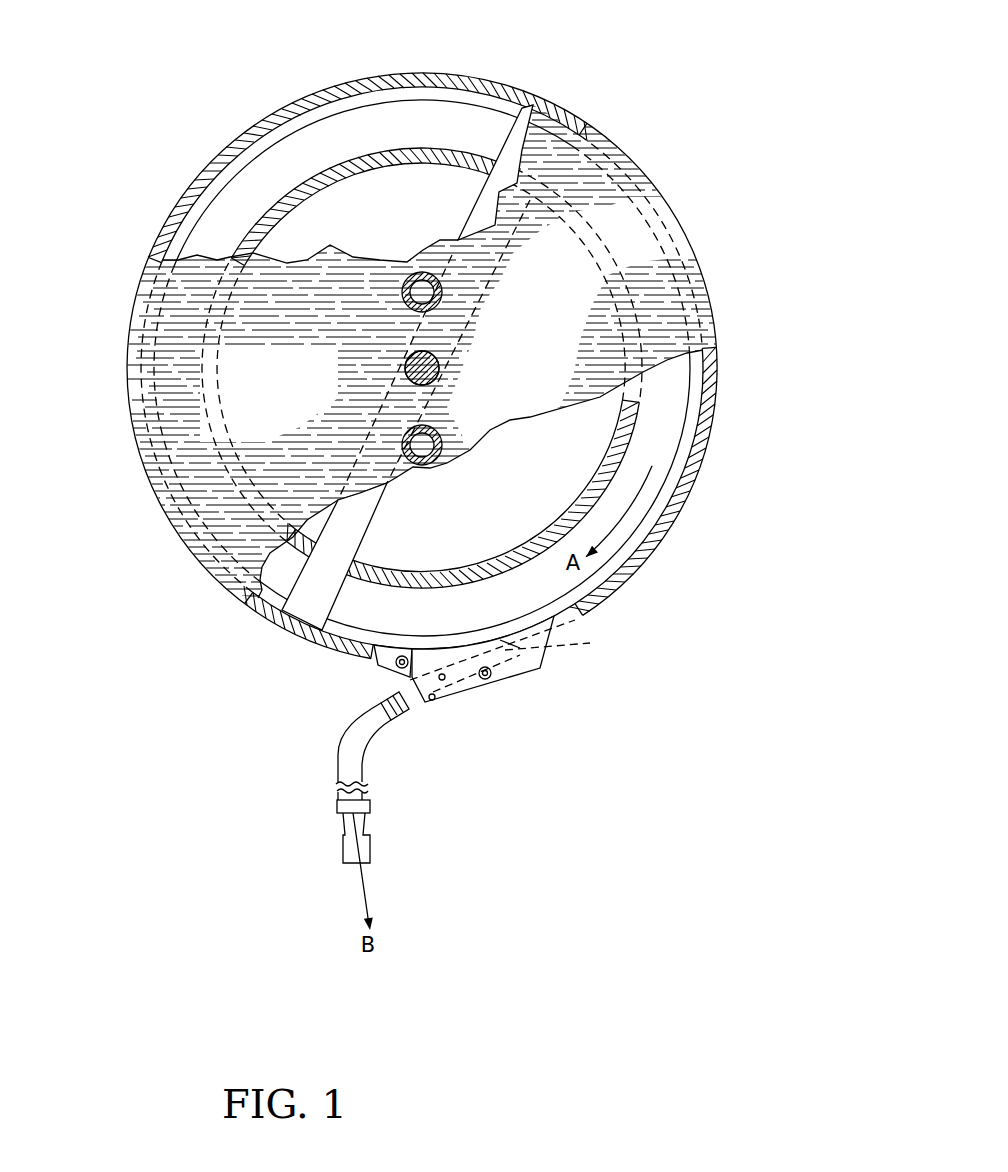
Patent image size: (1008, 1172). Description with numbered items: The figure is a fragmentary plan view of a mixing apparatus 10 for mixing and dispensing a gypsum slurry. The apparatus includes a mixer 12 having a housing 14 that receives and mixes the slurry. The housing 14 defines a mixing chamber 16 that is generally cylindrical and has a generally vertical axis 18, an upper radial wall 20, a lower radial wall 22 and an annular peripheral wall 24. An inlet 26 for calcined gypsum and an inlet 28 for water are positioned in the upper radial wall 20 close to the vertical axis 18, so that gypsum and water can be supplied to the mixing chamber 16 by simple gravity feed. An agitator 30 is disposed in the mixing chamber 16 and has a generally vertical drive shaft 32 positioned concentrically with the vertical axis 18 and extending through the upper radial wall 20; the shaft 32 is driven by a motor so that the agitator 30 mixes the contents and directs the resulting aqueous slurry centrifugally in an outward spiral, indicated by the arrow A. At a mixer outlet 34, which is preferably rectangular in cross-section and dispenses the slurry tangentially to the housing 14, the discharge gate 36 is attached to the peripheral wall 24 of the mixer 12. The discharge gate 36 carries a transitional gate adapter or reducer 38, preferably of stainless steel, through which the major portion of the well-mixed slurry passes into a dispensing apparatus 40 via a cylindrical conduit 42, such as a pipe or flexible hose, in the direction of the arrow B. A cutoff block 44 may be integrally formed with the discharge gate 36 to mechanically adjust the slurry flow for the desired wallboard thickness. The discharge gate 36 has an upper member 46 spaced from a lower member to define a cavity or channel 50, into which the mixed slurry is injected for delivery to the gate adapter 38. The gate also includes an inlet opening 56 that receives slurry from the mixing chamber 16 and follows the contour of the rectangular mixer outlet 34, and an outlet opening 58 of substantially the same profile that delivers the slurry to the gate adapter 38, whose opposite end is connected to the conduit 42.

The mixing apparatus 10 is at (780, 295).
The mixer 12 is at (550, 94).
The housing 14 is at (622, 153).
The mixing chamber 16 is at (672, 400).
The vertical axis 18 is at (410, 362).
The upper radial wall 20 is at (650, 204).
The lower radial wall 22 is at (266, 178).
The annular peripheral wall 24 is at (205, 172).
The inlet for calcined gypsum 26 is at (420, 290).
The inlet for water 28 is at (410, 442).
The agitator 30 is at (307, 603).
The drive shaft 32 is at (410, 373).
The mixer outlet 34 is at (440, 627).
The discharge gate 36 is at (535, 667).
The gate adapter 38 is at (424, 682).
The dispensing apparatus 40 is at (337, 805).
The cylindrical conduit 42 is at (395, 752).
The cutoff block 44 is at (412, 676).
The upper member 46 is at (509, 667).
The channel 50 is at (592, 643).
The inlet opening 56 is at (515, 627).
The outlet opening 58 is at (397, 703).